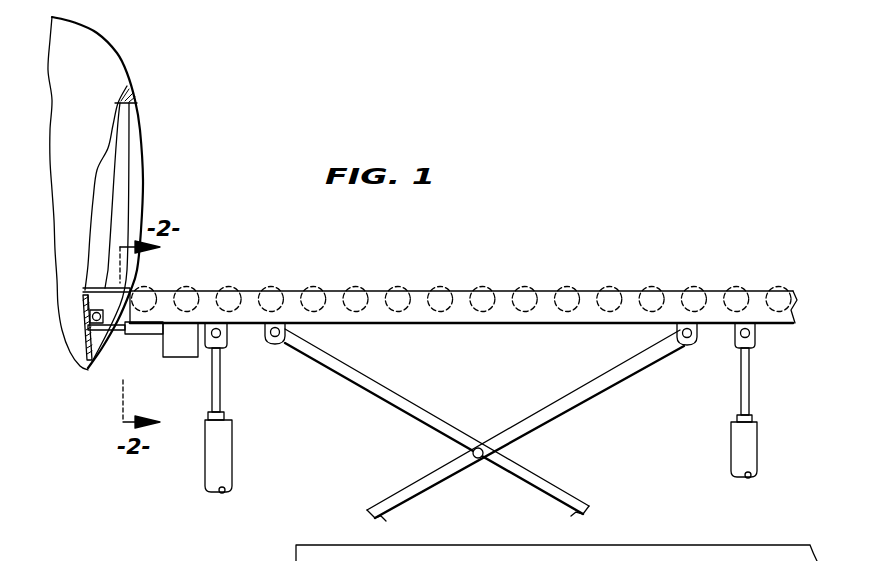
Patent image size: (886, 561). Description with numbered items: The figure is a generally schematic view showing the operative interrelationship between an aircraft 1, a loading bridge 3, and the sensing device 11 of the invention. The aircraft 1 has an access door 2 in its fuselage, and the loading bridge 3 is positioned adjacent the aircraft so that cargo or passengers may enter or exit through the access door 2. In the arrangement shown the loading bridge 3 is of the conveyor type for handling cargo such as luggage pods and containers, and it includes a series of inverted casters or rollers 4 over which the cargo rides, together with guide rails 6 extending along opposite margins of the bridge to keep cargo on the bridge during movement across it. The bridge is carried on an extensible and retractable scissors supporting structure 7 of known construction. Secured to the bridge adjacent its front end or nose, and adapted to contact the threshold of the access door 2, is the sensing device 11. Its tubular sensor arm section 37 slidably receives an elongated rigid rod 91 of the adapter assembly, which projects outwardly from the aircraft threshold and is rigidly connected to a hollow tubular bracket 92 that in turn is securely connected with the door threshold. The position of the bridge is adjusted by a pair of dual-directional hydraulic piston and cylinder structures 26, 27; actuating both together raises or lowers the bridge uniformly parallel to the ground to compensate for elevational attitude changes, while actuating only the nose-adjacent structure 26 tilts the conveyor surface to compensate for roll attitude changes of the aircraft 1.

The aircraft 1 is at (128, 63).
The access door 2 is at (141, 164).
The loading bridge 3 is at (299, 291).
The rollers 4 is at (148, 288).
The guide rails 6 is at (465, 290).
The scissors supporting structure 7 is at (438, 423).
The sensing device 11 is at (178, 358).
The hydraulic piston and cylinder structure 26 is at (207, 443).
The hydraulic piston and cylinder structure 27 is at (735, 444).
The tubular sensor arm section 37 is at (136, 335).
The rigid rod 91 is at (97, 362).
The tubular bracket 92 is at (84, 318).